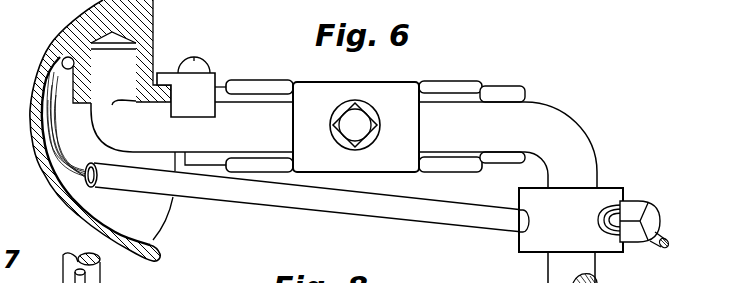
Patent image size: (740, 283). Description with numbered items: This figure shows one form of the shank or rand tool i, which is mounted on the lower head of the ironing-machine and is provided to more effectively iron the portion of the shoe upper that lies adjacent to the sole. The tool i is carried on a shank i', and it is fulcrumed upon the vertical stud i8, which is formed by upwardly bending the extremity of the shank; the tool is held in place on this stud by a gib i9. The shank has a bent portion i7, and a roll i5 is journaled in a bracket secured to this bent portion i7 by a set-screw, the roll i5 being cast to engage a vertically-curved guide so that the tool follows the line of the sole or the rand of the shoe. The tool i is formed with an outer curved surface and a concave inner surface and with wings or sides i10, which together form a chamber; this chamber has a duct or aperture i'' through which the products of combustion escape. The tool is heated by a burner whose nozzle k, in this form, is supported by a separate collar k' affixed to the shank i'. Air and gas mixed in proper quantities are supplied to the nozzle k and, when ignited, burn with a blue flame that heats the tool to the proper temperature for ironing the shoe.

The shank or rand tool i is at (92, 130).
The shank i' is at (585, 267).
The duct or aperture i'' is at (64, 36).
The roll i5 is at (455, 80).
The bent portion of the shank i7 is at (445, 135).
The vertical stud i8 is at (120, 70).
The gib i9 is at (200, 90).
The wings or sides i10 is at (163, 207).
The nozzle k is at (307, 209).
The collar k' is at (594, 220).